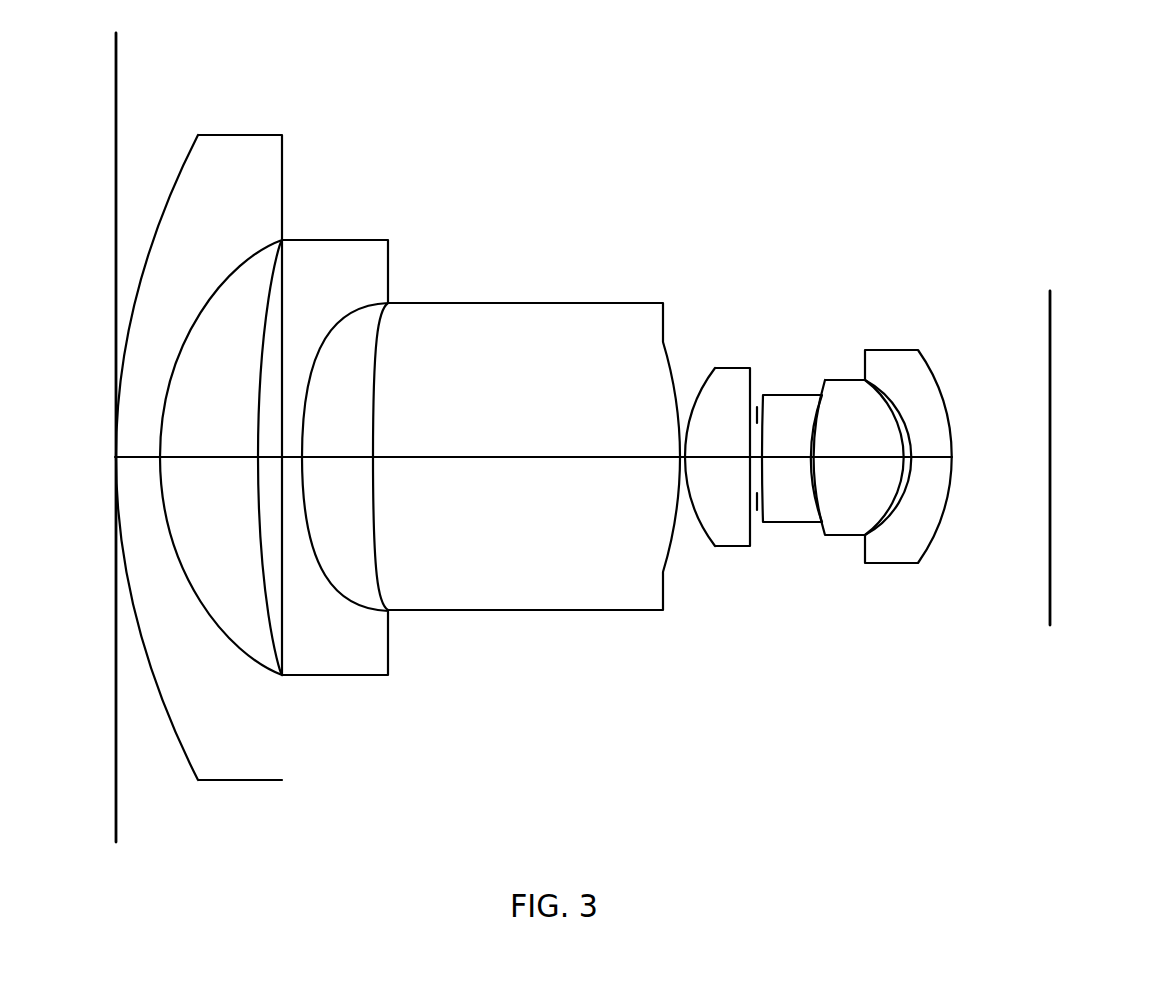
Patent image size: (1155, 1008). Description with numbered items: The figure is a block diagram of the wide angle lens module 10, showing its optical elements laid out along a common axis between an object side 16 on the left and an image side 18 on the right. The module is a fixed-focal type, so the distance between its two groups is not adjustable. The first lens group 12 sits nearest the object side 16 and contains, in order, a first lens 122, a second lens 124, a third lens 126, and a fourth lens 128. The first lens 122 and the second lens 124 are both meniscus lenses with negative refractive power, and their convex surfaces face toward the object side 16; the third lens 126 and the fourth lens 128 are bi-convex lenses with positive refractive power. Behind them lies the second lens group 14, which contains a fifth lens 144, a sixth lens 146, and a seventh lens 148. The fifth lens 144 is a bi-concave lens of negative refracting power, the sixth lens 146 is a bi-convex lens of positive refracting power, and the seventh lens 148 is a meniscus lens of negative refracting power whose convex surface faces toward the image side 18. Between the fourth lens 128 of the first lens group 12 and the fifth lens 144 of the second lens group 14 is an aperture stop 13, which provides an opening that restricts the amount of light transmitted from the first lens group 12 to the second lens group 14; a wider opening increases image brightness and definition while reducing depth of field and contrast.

The wide angle lens module 10 is at (605, 38).
The first lens group 12 is at (745, 132).
The aperture stop 13 is at (755, 500).
The second lens group 14 is at (950, 132).
The object side 16 is at (117, 810).
The image side 18 is at (1050, 562).
The first lens 122 is at (243, 738).
The second lens 124 is at (338, 633).
The third lens 126 is at (532, 589).
The fourth lens 128 is at (742, 532).
The fifth lens 144 is at (783, 510).
The sixth lens 146 is at (838, 522).
The seventh lens 148 is at (918, 545).